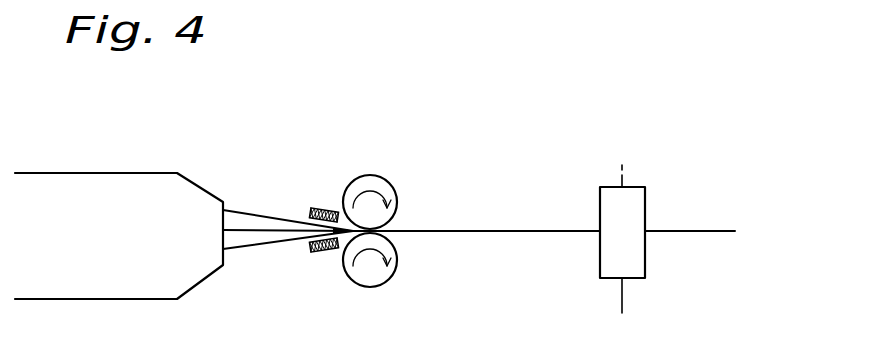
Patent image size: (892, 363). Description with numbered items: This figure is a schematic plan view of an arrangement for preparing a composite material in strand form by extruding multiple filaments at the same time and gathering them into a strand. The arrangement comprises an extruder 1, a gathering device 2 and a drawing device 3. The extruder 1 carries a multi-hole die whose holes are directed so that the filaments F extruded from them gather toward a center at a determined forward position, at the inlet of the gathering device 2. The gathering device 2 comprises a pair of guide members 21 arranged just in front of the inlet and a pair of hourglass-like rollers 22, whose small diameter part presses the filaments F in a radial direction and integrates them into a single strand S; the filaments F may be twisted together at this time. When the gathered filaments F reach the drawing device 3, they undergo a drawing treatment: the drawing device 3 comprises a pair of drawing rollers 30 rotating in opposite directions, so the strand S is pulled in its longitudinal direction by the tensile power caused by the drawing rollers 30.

The extruder 1 is at (160, 164).
The filaments F is at (260, 211).
The guide members 21 is at (314, 208).
The gathering device 2 is at (410, 207).
The hourglass-like rollers 22 is at (376, 175).
The strand S is at (517, 233).
The drawing device 3 is at (671, 211).
The drawing rollers 30 is at (638, 268).